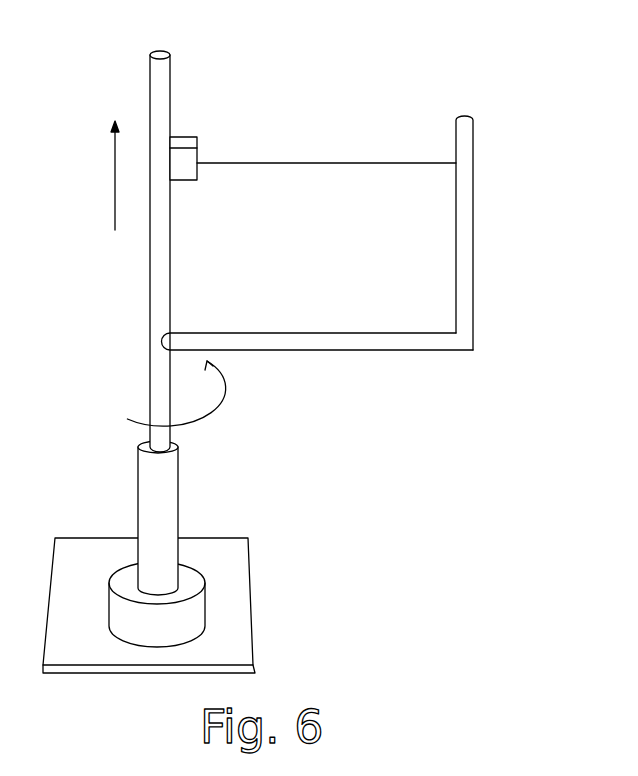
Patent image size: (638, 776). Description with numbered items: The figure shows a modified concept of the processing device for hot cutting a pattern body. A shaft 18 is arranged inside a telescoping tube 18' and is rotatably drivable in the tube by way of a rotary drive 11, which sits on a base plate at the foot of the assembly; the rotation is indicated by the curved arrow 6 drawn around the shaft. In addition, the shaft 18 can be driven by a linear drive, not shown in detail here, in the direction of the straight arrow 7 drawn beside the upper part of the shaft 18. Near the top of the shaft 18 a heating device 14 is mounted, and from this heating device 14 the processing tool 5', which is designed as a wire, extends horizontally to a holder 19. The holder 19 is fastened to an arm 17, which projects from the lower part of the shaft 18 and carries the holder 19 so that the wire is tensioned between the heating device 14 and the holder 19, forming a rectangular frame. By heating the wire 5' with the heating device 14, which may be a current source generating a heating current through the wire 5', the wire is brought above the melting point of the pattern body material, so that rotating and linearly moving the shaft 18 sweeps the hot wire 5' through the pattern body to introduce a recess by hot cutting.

The processing tool 5' is at (326, 111).
The arrow 6 is at (225, 386).
The arrow 7 is at (110, 172).
The rotary drive 11 is at (203, 603).
The heating device 14 is at (182, 130).
The arm 17 is at (362, 350).
The shaft 18 is at (213, 231).
The telescoping tube 18' is at (106, 518).
The holder 19 is at (473, 170).